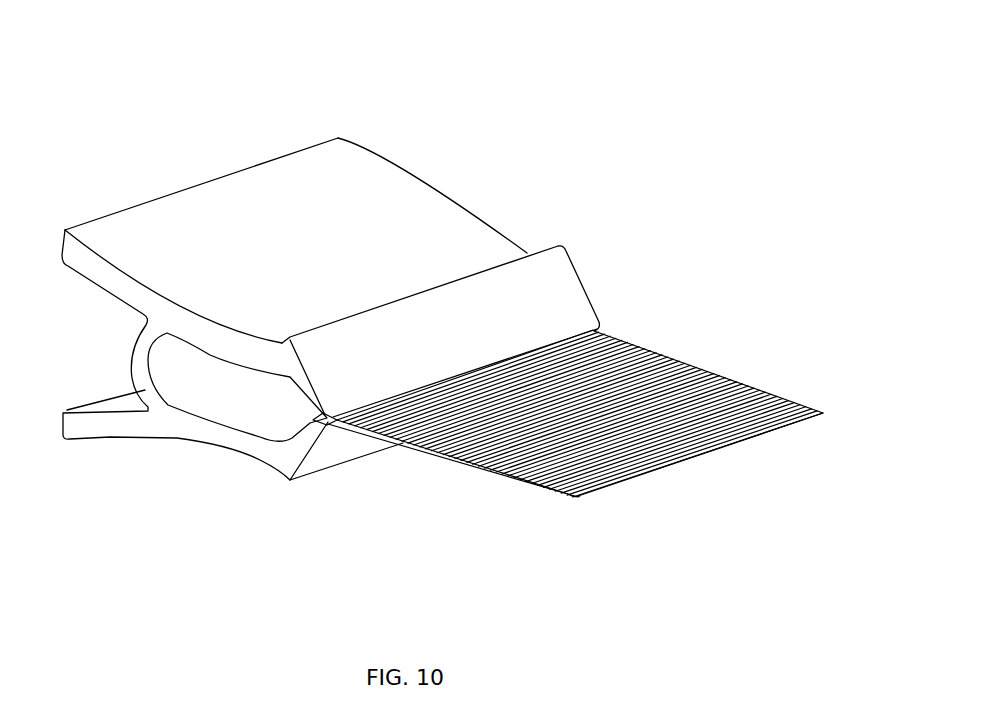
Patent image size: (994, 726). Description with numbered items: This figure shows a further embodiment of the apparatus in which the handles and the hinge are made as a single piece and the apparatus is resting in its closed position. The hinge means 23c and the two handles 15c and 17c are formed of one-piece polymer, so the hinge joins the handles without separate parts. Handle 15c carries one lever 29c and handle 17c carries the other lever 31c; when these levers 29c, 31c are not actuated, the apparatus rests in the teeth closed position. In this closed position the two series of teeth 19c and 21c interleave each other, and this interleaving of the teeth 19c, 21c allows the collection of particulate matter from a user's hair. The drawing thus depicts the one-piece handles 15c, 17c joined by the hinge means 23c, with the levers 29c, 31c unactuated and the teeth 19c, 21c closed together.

The handle 15c is at (573, 125).
The handle 17c is at (50, 530).
The series of teeth 19c is at (740, 382).
The series of teeth 21c is at (580, 497).
The hinge means 23c is at (122, 347).
The lever 29c is at (140, 225).
The lever 31c is at (117, 432).